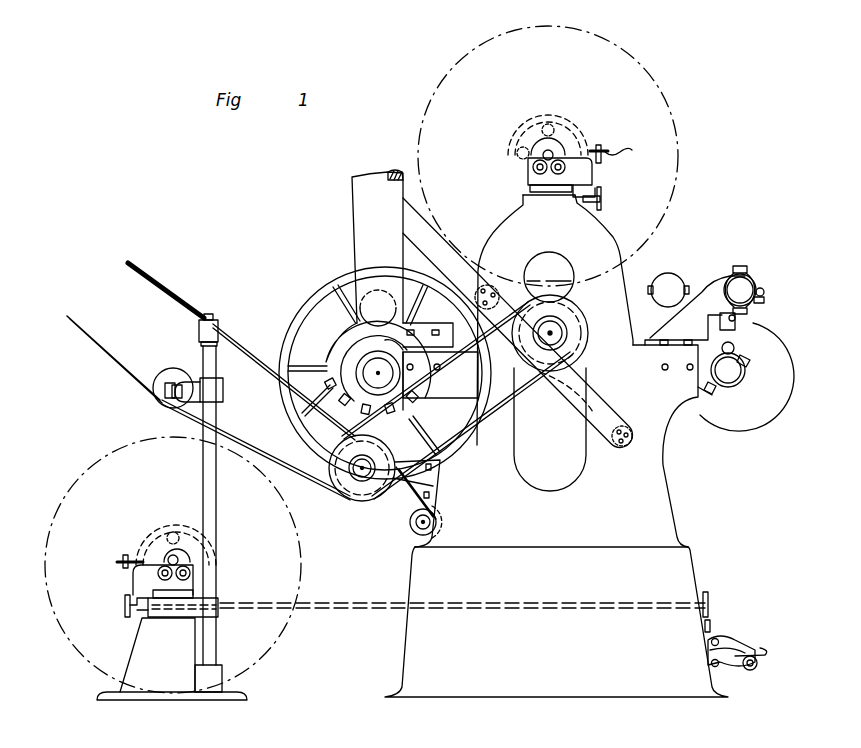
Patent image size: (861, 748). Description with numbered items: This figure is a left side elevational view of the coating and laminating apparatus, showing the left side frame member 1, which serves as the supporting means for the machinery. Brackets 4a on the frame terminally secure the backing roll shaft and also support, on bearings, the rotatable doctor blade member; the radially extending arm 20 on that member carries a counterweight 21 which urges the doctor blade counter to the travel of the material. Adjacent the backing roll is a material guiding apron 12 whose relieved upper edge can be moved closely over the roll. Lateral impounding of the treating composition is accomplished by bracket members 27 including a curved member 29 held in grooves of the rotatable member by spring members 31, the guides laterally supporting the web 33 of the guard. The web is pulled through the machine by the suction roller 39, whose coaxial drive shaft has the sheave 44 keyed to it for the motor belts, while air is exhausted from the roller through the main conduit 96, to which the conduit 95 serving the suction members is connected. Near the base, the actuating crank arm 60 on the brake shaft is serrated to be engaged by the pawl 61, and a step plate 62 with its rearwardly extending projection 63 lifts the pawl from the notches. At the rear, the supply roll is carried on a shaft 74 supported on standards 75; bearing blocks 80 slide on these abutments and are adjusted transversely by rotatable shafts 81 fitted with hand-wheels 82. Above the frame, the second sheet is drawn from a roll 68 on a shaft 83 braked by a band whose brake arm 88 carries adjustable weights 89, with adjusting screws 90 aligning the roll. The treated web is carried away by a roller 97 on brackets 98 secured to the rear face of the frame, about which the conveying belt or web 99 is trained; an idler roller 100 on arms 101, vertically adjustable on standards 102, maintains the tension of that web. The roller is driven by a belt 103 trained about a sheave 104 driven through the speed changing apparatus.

The side frame member 1 is at (657, 507).
The bracket 4a is at (678, 322).
The material guiding apron 12 is at (757, 402).
The radially extending arm 20 is at (692, 298).
The counterweight 21 is at (669, 277).
The bracket member 27 is at (764, 301).
The curved member 29 is at (752, 278).
The spring member 31 is at (764, 290).
The web of guard member 33 is at (748, 320).
The suction roller 39 is at (350, 388).
The sheave 44 is at (304, 303).
The actuating crank arm 60 is at (733, 667).
The pawl 61 is at (728, 640).
The step plate 62 is at (750, 653).
The rearwardly extending projection 63 is at (740, 650).
The roll 68 is at (648, 70).
The shaft 74 is at (170, 558).
The standard 75 is at (163, 630).
The bearing block 80 is at (143, 582).
The rotatable shaft 81 is at (357, 613).
The hand-wheel 82 is at (709, 598).
The roller or shaft 83 is at (552, 150).
The brake arm 88 is at (630, 150).
The adjustable weights 89 is at (603, 148).
The adjusting screw 90 is at (600, 198).
The conduit 95 is at (598, 402).
The main conduit 96 is at (357, 200).
The roller 97 is at (363, 492).
The bracket 98 is at (410, 487).
The conveying belt or web 99 is at (173, 292).
The idler roller 100 is at (167, 365).
The arm 101 is at (207, 390).
The standard 102 is at (210, 492).
The belt 103 is at (478, 448).
The sheave 104 is at (575, 322).